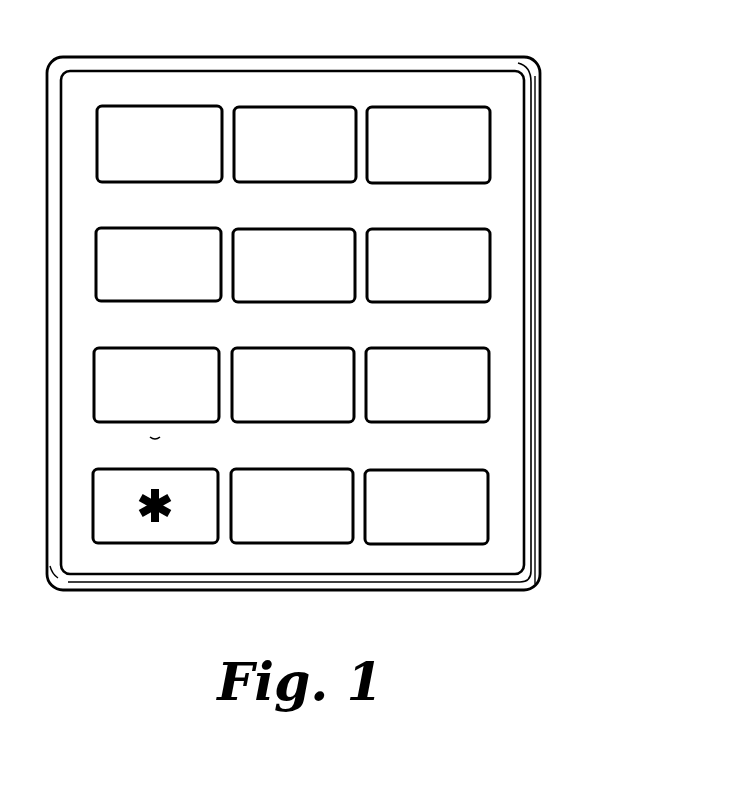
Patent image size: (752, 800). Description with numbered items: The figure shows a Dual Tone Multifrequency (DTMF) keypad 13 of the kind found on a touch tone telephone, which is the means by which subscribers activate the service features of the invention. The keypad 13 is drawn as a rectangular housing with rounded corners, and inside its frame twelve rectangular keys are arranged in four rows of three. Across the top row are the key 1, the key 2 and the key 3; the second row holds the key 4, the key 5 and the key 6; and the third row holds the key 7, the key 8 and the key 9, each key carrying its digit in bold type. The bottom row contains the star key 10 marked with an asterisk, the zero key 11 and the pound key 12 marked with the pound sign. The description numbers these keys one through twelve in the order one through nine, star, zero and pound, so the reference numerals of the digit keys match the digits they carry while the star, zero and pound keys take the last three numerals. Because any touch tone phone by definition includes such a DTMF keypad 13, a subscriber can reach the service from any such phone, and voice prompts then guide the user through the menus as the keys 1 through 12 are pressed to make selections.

The key 1 is at (170, 104).
The key 2 is at (305, 106).
The key 3 is at (435, 108).
The key 4 is at (190, 228).
The key 5 is at (323, 229).
The key 6 is at (456, 229).
The key 7 is at (188, 349).
The key 8 is at (320, 349).
The key 9 is at (455, 349).
The * key 10 is at (187, 469).
The 0 key 11 is at (318, 469).
The # key 12 is at (453, 472).
The DTMF keypad 13 is at (495, 87).